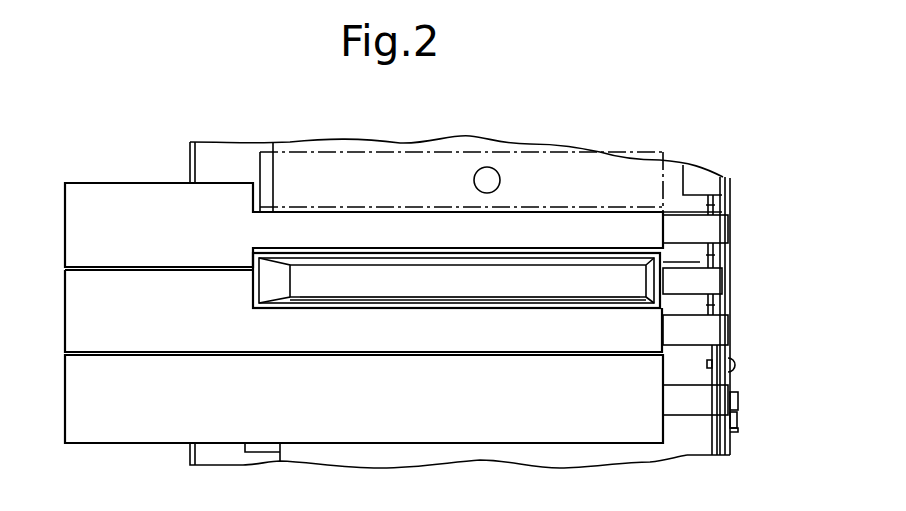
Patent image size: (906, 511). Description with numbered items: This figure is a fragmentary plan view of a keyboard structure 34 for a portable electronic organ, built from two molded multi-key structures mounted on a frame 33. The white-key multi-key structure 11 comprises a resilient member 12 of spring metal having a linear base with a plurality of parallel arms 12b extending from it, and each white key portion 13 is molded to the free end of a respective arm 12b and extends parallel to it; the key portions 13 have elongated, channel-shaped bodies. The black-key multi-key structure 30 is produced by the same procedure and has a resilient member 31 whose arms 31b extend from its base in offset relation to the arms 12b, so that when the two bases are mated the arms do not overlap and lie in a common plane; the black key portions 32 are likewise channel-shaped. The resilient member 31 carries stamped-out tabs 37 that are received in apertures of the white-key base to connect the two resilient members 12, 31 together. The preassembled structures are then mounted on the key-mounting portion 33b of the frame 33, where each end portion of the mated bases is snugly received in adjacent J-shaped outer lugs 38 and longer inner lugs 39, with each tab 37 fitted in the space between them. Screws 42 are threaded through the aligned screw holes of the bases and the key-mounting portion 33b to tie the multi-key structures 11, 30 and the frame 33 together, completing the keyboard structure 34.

The multi-key structure 11 is at (604, 443).
The resilient member 12 is at (708, 255).
The arms 12b is at (668, 328).
The key portions 13 is at (222, 258).
The multi-key structure 30 is at (454, 289).
The resilient member 31 is at (708, 205).
The arms 31b is at (683, 262).
The black key portions 32 is at (494, 300).
The frame 33 is at (515, 456).
The key-mounting portion 33b is at (710, 308).
The keyboard structure 34 is at (468, 136).
The tabs 37 is at (738, 416).
The outer lugs 38 is at (738, 433).
The inner lugs 39 is at (738, 398).
The screws 42 is at (735, 360).